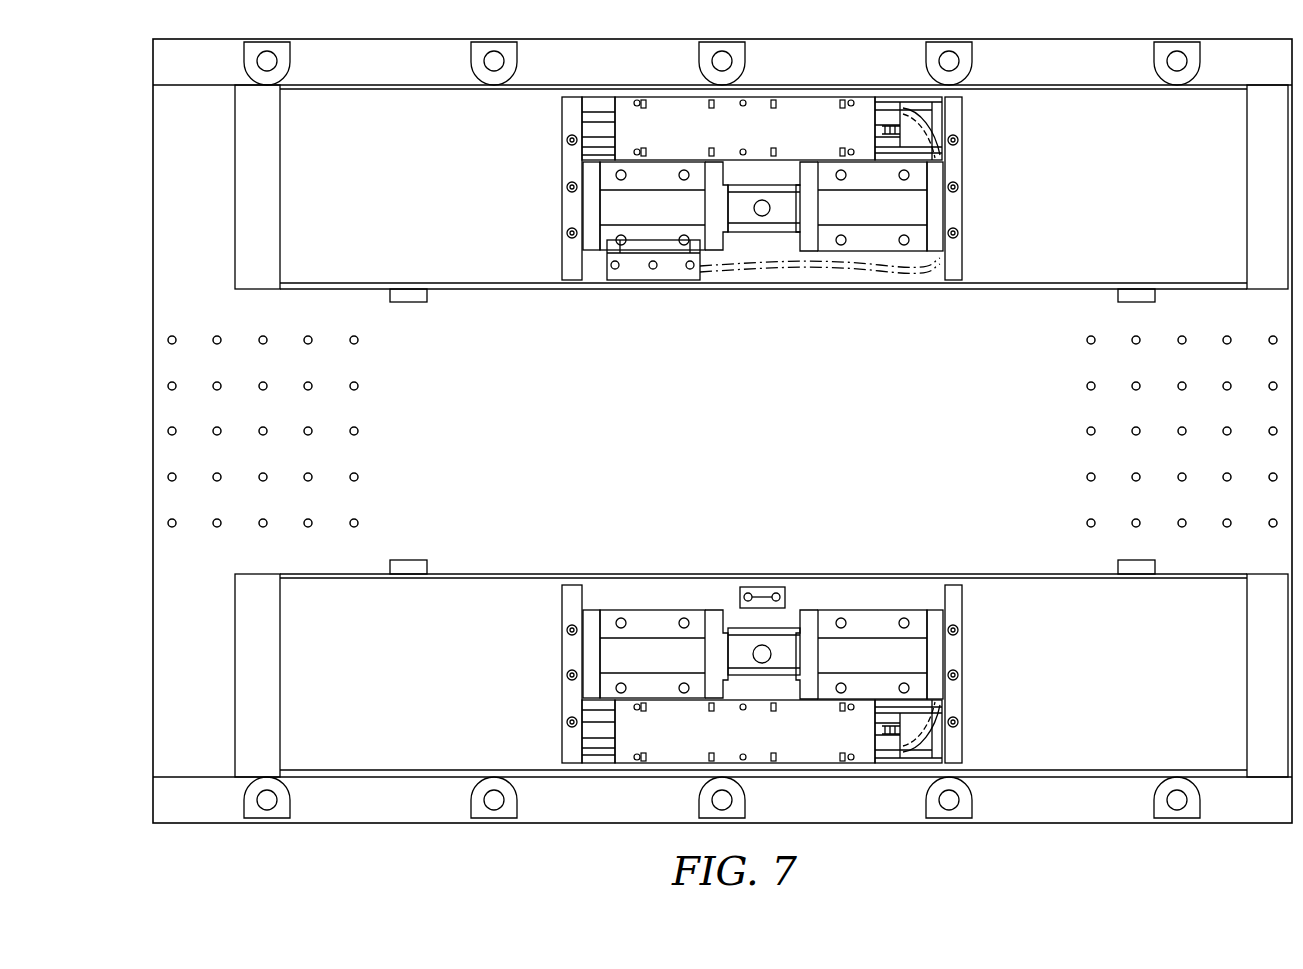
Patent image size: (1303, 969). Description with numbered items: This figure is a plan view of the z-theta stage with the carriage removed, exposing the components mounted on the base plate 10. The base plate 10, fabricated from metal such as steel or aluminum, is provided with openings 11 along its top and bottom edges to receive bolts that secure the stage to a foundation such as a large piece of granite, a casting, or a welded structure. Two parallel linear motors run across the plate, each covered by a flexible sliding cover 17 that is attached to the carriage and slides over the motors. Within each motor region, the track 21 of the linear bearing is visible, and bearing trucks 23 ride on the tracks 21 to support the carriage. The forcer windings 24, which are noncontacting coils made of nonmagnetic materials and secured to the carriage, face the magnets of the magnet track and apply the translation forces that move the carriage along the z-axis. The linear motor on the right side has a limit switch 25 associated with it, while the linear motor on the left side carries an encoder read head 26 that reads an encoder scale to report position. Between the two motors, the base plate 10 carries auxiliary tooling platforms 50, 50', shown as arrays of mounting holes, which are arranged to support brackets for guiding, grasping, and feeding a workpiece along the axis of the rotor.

The base plate 10 is at (172, 672).
The openings 11 is at (270, 806).
The flexible sliding cover 17 is at (440, 112).
The track 21 is at (772, 652).
The bearing trucks 23 is at (652, 172).
The forcer windings 24 is at (800, 110).
The limit switch 25 is at (755, 587).
The encoder read head 26 is at (640, 250).
The auxiliary tooling platform 50 is at (1161, 431).
The auxiliary tooling platform 50' is at (287, 431).